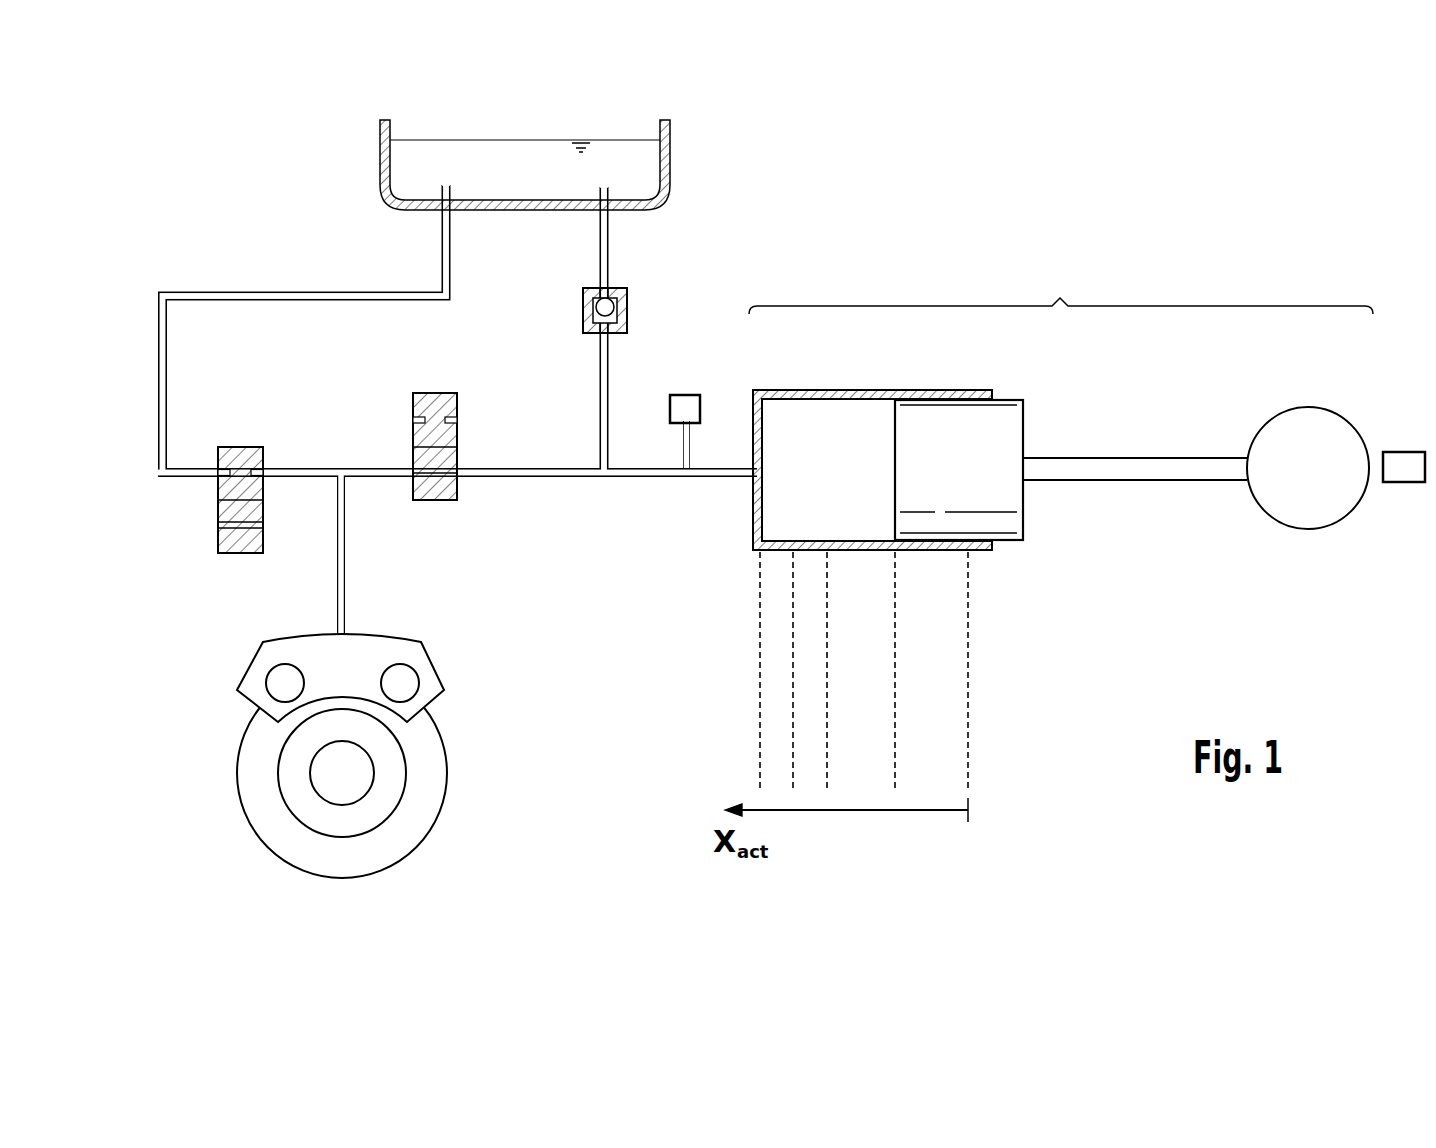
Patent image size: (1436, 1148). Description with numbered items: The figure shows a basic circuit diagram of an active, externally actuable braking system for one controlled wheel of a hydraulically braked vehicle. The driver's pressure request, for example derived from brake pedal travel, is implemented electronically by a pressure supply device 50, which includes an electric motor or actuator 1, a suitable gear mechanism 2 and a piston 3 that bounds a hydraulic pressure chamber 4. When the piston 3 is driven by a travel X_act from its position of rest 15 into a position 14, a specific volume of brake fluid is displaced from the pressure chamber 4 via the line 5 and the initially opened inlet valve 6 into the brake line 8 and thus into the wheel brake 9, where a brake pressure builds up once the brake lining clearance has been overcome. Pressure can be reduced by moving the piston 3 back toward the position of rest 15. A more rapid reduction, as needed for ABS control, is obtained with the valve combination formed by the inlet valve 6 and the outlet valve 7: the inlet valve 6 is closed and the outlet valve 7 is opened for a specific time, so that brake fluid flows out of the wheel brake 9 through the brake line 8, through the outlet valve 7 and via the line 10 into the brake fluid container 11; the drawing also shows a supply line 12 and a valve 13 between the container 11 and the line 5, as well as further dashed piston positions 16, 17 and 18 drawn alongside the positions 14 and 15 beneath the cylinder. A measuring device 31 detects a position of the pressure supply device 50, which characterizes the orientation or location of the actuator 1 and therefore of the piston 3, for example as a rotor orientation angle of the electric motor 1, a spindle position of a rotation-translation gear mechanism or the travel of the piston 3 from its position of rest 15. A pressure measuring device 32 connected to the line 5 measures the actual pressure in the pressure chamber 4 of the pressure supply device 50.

The electric motor 1 is at (1308, 406).
The gear mechanism 2 is at (1139, 481).
The piston 3 is at (1025, 420).
The pressure chamber 4 is at (820, 412).
The line 5 is at (656, 478).
The inlet valve 6 is at (437, 393).
The outlet valve 7 is at (240, 447).
The brake line 8 is at (346, 548).
The wheel brake 9 is at (405, 645).
The line 10 is at (167, 323).
The brake fluid container 11 is at (380, 150).
The supply line 12 is at (600, 249).
The check valve 13 is at (628, 305).
The position 14 is at (895, 665).
The position of rest 15 is at (968, 617).
The piston position 16 is at (760, 610).
The piston position 17 is at (827, 657).
The piston position 18 is at (793, 705).
The measuring device 31 is at (1405, 452).
The pressure measuring device 32 is at (686, 395).
The pressure supply device 50 is at (1061, 290).